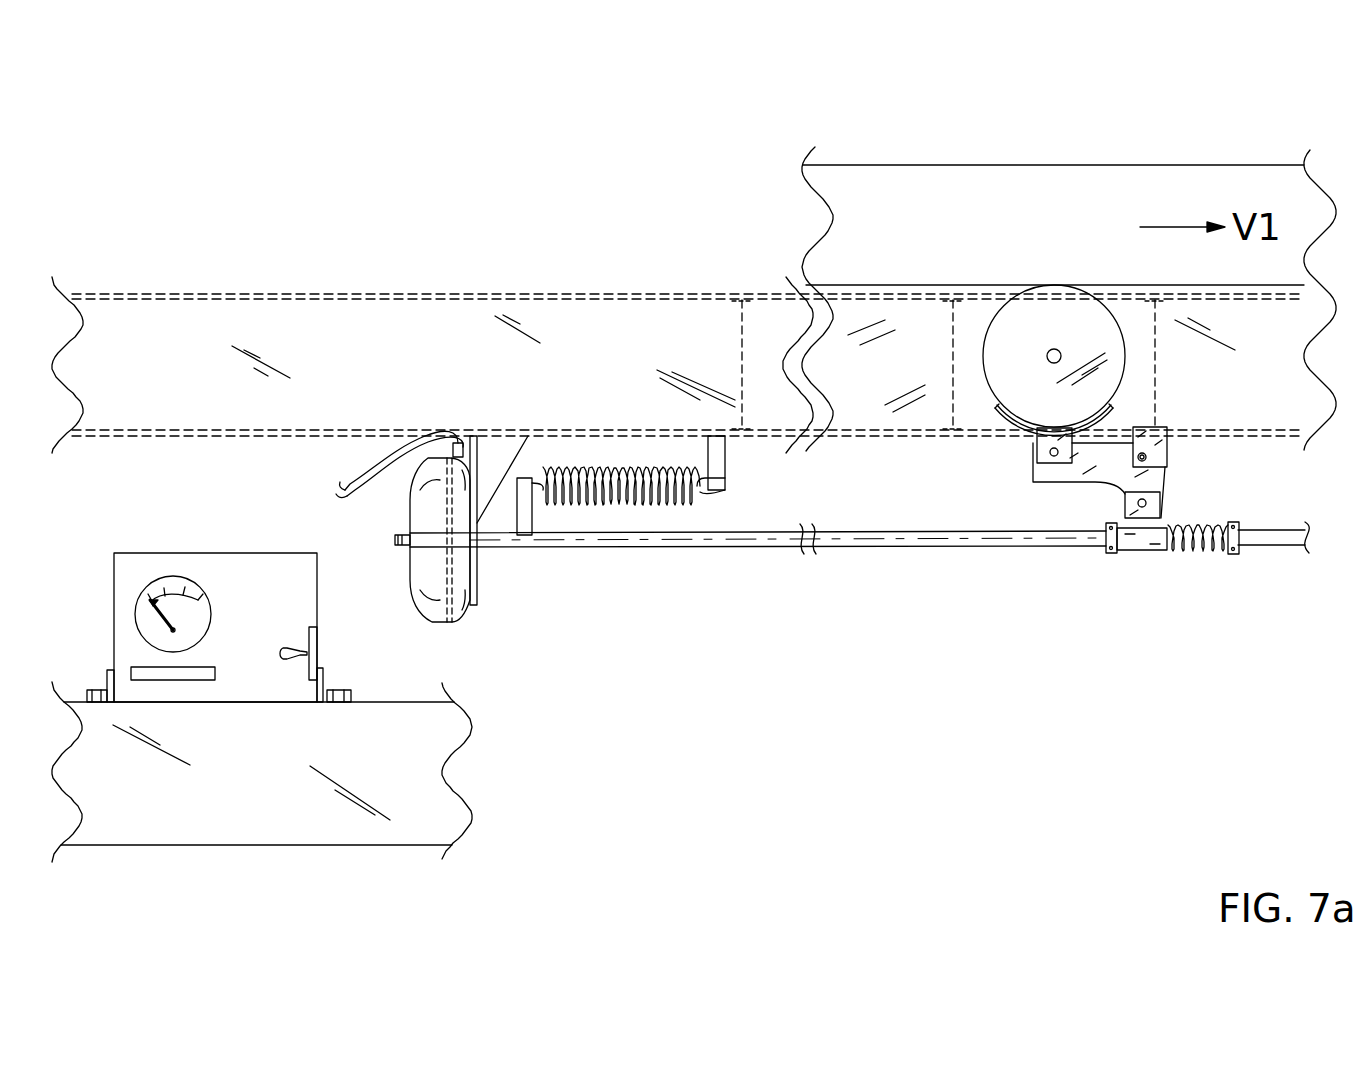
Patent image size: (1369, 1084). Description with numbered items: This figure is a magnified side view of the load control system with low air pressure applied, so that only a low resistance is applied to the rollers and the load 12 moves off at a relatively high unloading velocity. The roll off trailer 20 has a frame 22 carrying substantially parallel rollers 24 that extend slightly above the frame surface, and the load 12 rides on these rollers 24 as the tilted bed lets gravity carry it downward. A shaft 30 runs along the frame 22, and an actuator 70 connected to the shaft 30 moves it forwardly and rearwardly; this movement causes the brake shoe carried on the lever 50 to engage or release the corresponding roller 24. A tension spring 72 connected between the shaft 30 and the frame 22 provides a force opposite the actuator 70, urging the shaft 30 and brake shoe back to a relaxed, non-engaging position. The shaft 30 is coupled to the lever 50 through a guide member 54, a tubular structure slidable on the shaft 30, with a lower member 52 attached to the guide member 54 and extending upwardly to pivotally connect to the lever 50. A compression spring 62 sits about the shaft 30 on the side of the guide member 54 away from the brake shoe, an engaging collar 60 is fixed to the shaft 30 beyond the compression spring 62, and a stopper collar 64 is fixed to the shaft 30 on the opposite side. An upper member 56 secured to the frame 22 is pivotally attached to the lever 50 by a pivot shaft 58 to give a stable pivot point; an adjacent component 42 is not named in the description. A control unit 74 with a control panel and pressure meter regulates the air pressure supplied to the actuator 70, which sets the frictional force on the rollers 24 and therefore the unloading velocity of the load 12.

The load 12 is at (996, 266).
The roll off trailer 20 is at (440, 294).
The frame 22 is at (670, 294).
The roller 24 is at (984, 356).
The shaft 30 is at (897, 547).
The mounting bracket 42 is at (1037, 441).
The lever 50 is at (1060, 481).
The lower member 52 is at (1125, 513).
The guide member 54 is at (1138, 551).
The upper member 56 is at (1167, 448).
The pivot shaft 58 is at (1146, 459).
The engaging collar 60 is at (1239, 541).
The compression spring 62 is at (1188, 553).
The stopper collar 64 is at (1107, 553).
The actuator 70 is at (465, 582).
The tension spring 72 is at (700, 503).
The control unit 74 is at (262, 577).